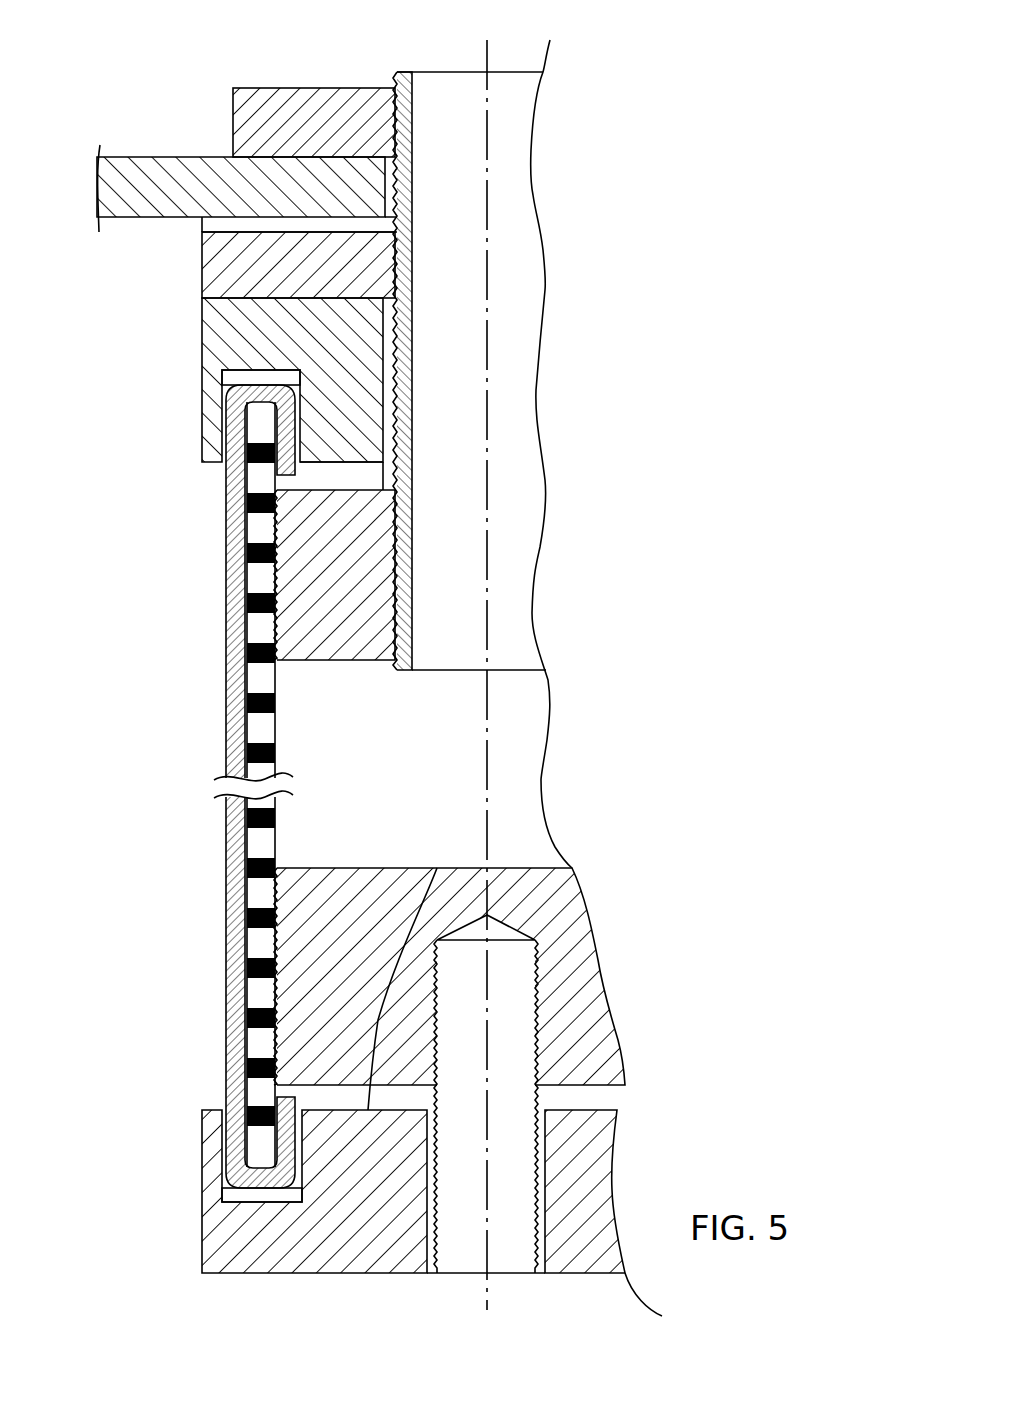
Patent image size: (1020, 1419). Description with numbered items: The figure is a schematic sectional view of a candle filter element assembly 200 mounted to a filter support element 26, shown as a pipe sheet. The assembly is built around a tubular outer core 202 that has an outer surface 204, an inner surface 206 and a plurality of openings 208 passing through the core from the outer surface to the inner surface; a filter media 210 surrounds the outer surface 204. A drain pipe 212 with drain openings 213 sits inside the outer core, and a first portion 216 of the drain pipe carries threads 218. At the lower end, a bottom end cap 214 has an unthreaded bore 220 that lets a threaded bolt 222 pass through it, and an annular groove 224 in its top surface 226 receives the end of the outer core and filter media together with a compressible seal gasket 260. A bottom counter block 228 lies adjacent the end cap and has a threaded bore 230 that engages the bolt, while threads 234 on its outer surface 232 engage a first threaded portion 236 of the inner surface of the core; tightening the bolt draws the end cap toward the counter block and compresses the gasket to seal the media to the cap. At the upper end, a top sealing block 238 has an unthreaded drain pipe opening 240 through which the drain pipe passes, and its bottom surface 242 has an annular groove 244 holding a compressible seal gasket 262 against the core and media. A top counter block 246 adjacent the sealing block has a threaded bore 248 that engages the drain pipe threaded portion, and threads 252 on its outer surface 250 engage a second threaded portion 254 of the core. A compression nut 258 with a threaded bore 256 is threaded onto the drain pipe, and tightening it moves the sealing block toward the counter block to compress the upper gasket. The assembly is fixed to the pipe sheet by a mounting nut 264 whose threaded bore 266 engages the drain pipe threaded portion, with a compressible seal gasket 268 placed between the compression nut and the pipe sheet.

The filter support element 26 is at (118, 155).
The candle filter element assembly 200 is at (622, 173).
The tubular outer core 202 is at (263, 730).
The outer surface 204 is at (263, 730).
The inner surface 206 is at (277, 752).
The openings 208 is at (277, 703).
The filter media 210 is at (232, 608).
The drain pipe 212 is at (512, 72).
The drain openings 213 is at (405, 463).
The bottom end cap 214 is at (300, 1273).
The first portion of drain pipe 216 is at (590, 393).
The threads 218 is at (400, 558).
The unthreaded bore 220 is at (427, 1232).
The threaded bolt 222 is at (507, 1243).
The annular groove 224 is at (222, 1147).
The top surface 226 is at (437, 940).
The bottom counter block 228 is at (437, 868).
The threaded bore 230 is at (535, 1045).
The outer surface 232 is at (278, 933).
The threads 234 is at (355, 893).
The first threaded portion 236 is at (250, 948).
The top sealing block 238 is at (202, 312).
The unthreaded drain pipe opening 240 is at (390, 360).
The bottom surface 242 is at (360, 455).
The annular groove 244 is at (226, 420).
The top counter block 246 is at (360, 655).
The threaded bore 248 is at (390, 604).
The outer surface 250 is at (272, 493).
The threads 252 is at (272, 530).
The second threaded portion 254 is at (200, 556).
The threaded bore 256 is at (413, 270).
The compression nut 258 is at (202, 257).
The compressible seal gasket 260 is at (233, 1197).
The compressible seal gasket 262 is at (240, 375).
The mounting nut 264 is at (233, 122).
The threaded bore 266 is at (415, 105).
The compressible seal gasket 268 is at (385, 225).